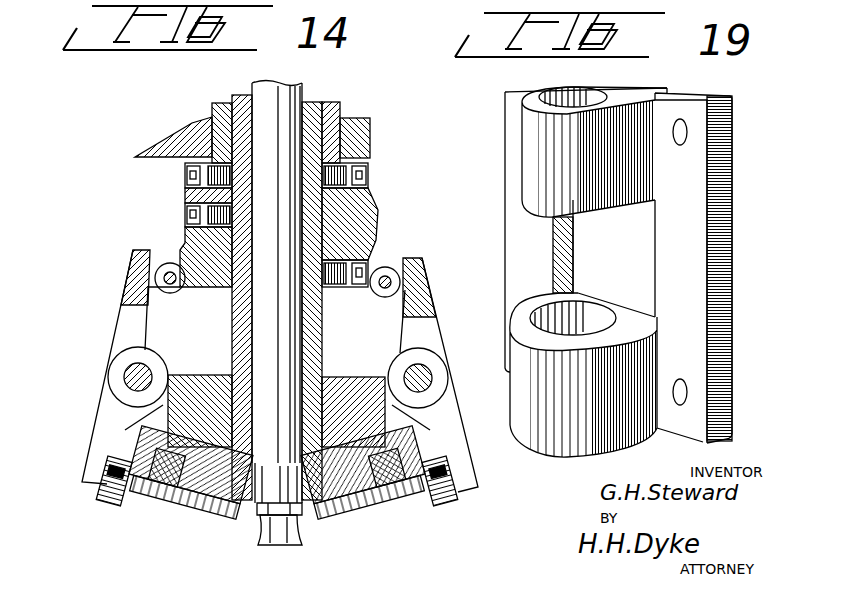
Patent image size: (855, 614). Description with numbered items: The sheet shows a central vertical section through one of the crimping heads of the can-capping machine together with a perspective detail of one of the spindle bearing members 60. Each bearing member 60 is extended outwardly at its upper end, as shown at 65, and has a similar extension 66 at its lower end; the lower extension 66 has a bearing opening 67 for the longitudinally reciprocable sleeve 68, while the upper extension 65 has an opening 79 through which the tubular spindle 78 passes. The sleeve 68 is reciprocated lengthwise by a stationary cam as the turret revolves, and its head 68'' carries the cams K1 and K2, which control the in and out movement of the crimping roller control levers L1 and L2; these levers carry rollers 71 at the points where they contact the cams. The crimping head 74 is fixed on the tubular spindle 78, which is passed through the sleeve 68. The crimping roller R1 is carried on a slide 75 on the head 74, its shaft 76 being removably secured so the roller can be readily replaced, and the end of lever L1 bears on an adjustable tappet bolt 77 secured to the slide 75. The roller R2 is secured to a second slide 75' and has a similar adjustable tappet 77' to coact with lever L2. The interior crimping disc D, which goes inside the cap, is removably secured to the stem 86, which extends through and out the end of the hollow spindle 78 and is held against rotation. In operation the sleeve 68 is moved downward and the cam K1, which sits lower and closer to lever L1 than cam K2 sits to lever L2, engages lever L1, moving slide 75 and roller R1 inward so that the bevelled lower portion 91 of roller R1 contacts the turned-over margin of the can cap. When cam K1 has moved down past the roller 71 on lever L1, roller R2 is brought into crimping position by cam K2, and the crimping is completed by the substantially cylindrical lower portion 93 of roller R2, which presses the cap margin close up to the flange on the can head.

In FIG. 19, the spindle bearing member 60 is at (725, 180).
In FIG. 19, the upper extension 65 is at (530, 138).
In FIG. 14, the lower end extension 66 is at (372, 146).
In FIG. 19, the lower end extension 66 is at (520, 385).
In FIG. 19, the bearing opening 67 is at (588, 312).
In FIG. 19, the opening 79 is at (563, 93).
In FIG. 14, the longitudinally reciprocable sleeve 68 is at (369, 130).
In FIG. 14, the head of sleeve 68'' is at (375, 179).
In FIG. 14, the cam K1 is at (182, 245).
In FIG. 14, the cam K2 is at (374, 222).
In FIG. 14, the roller 71 is at (175, 293).
In FIG. 14, the crimping roller control lever L1 is at (118, 321).
In FIG. 14, the crimping roller control lever L2 is at (438, 340).
In FIG. 14, the stem 86 is at (268, 327).
In FIG. 14, the tubular spindle 78 is at (322, 335).
In FIG. 14, the crimping head 74 is at (352, 388).
In FIG. 14, the slide 75 is at (182, 498).
In FIG. 14, the slide 75' is at (403, 460).
In FIG. 14, the shaft 76 is at (203, 530).
In FIG. 14, the adjustable tappet bolt 77 is at (101, 500).
In FIG. 14, the adjustable tappet 77' is at (464, 490).
In FIG. 14, the crimping roller R1 is at (175, 520).
In FIG. 14, the crimping roller R2 is at (385, 517).
In FIG. 14, the bevelled lower portion 91 is at (253, 547).
In FIG. 14, the cylindrical lower portion 93 is at (303, 515).
In FIG. 14, the crimping disc D is at (283, 545).